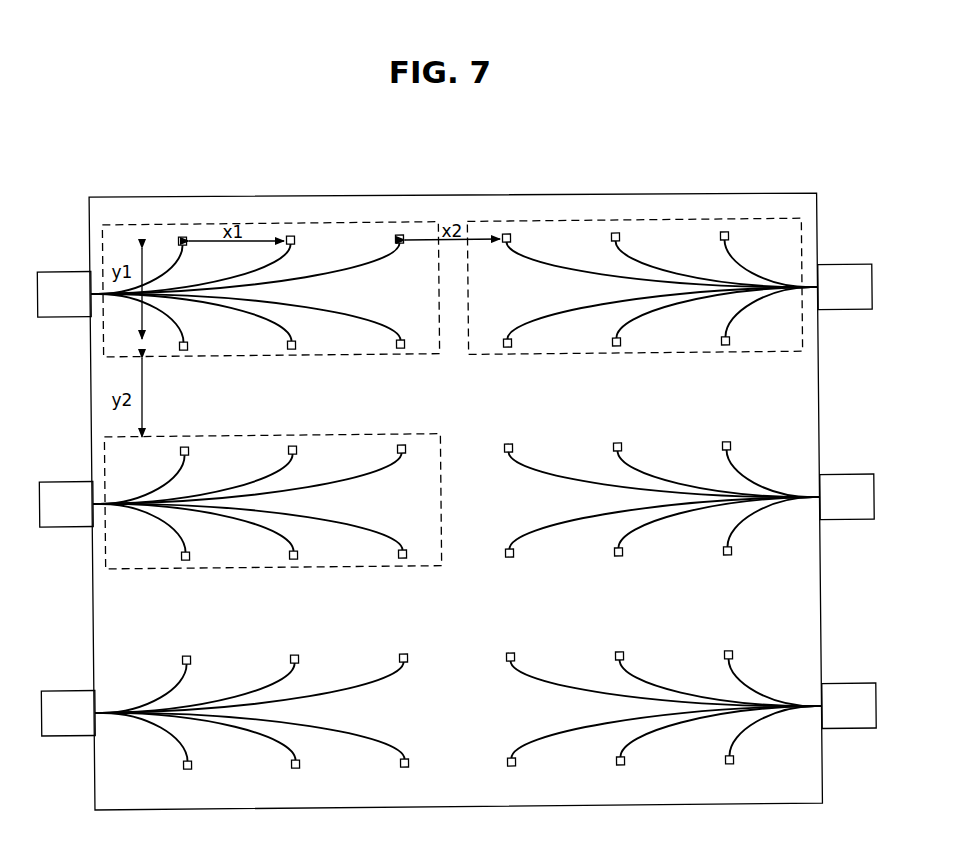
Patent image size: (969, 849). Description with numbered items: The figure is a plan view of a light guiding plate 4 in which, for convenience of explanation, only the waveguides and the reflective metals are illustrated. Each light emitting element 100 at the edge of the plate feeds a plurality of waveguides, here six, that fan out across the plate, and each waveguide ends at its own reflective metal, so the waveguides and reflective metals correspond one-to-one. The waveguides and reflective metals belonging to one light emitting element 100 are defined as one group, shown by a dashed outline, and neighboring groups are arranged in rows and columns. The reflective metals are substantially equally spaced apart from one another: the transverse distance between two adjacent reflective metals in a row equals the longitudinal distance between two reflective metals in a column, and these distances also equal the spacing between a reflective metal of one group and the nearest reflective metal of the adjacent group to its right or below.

The light guiding plate 4 is at (814, 154).
The light emitting element 100 is at (60, 272).